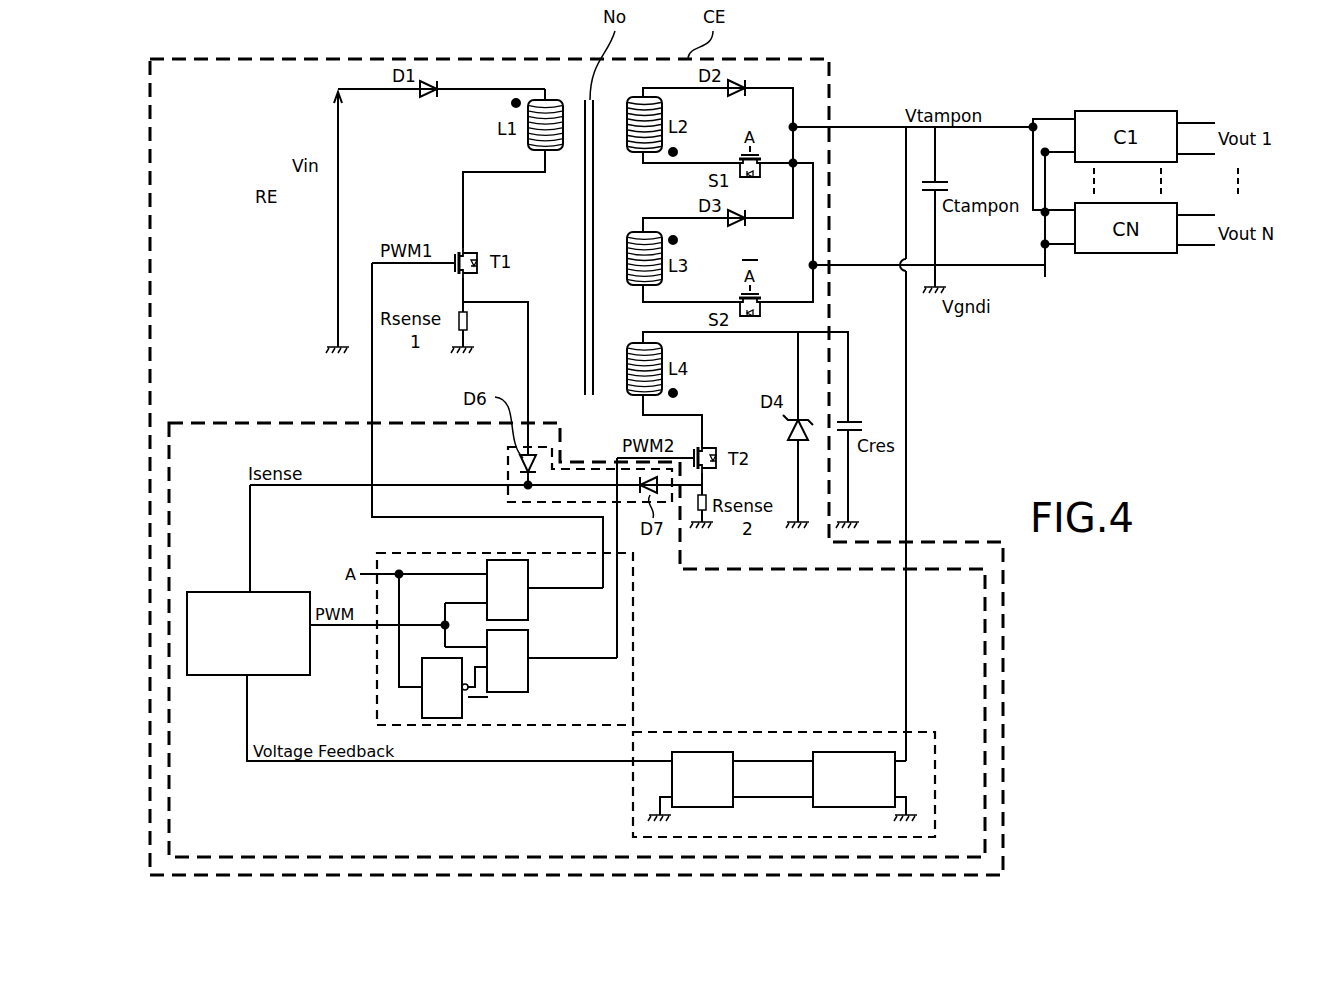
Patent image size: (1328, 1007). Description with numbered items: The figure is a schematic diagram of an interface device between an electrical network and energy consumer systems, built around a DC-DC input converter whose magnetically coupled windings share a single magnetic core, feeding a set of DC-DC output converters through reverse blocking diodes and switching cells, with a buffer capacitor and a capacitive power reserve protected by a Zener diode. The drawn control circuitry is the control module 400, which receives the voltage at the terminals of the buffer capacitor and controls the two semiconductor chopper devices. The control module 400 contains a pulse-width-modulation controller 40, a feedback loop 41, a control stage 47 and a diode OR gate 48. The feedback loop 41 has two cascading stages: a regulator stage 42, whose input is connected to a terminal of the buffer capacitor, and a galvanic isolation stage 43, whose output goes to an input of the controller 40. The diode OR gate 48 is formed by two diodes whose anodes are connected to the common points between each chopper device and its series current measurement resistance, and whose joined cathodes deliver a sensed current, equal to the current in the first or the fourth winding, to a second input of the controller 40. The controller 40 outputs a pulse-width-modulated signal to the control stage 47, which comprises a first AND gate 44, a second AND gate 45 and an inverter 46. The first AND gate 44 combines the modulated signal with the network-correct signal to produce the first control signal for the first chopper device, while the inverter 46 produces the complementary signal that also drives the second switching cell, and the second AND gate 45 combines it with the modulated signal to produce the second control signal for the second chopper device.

The PWM controller 40 is at (207, 667).
The feedback loop 41 is at (803, 765).
The regulator stage 42 is at (840, 765).
The galvanic isolation stage 43 is at (707, 765).
The first AND gate 44 is at (523, 606).
The second AND gate 45 is at (523, 679).
The inverter 46 is at (447, 705).
The control stage 47 is at (505, 679).
The diode OR gate 48 is at (507, 460).
The control module 400 is at (320, 857).